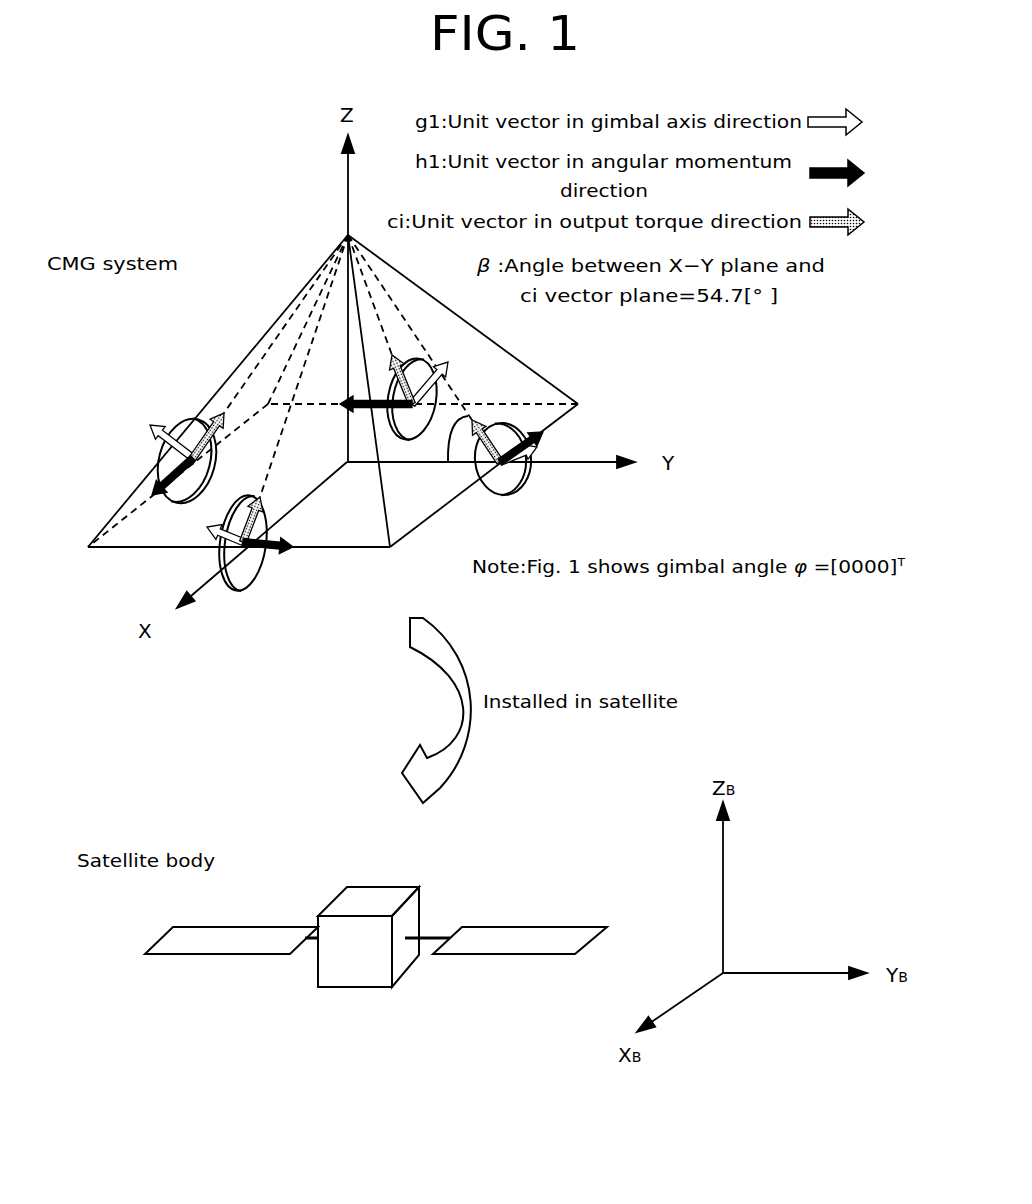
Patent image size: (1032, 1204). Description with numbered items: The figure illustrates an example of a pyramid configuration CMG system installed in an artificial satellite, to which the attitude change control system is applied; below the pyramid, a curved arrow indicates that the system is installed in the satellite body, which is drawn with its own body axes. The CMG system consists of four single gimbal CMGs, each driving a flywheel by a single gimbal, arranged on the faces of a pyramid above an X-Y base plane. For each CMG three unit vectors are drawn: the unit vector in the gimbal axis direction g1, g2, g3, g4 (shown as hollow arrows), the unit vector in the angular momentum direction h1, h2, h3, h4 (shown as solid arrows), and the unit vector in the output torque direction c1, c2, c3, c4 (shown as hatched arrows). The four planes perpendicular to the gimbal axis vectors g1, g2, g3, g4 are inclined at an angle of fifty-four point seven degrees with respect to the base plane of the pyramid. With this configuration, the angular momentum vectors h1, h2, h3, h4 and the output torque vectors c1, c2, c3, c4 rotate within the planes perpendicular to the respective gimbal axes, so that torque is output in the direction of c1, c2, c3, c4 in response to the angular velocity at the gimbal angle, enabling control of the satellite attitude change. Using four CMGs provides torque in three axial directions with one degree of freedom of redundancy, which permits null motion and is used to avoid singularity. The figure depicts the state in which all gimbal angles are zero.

The unit vector in gimbal axis direction g1 is at (162, 435).
The unit vector in angular momentum direction h1 is at (160, 476).
The unit vector in output torque direction c1 is at (215, 431).
The unit vector in gimbal axis direction g2 is at (214, 532).
The unit vector in angular momentum direction h2 is at (268, 557).
The unit vector in output torque direction c2 is at (265, 512).
The unit vector in gimbal axis direction g3 is at (523, 464).
The unit vector in angular momentum direction h3 is at (531, 446).
The unit vector in output torque direction c3 is at (485, 433).
The unit vector in gimbal axis direction g4 is at (440, 382).
The unit vector in angular momentum direction h4 is at (362, 396).
The unit vector in output torque direction c4 is at (393, 373).